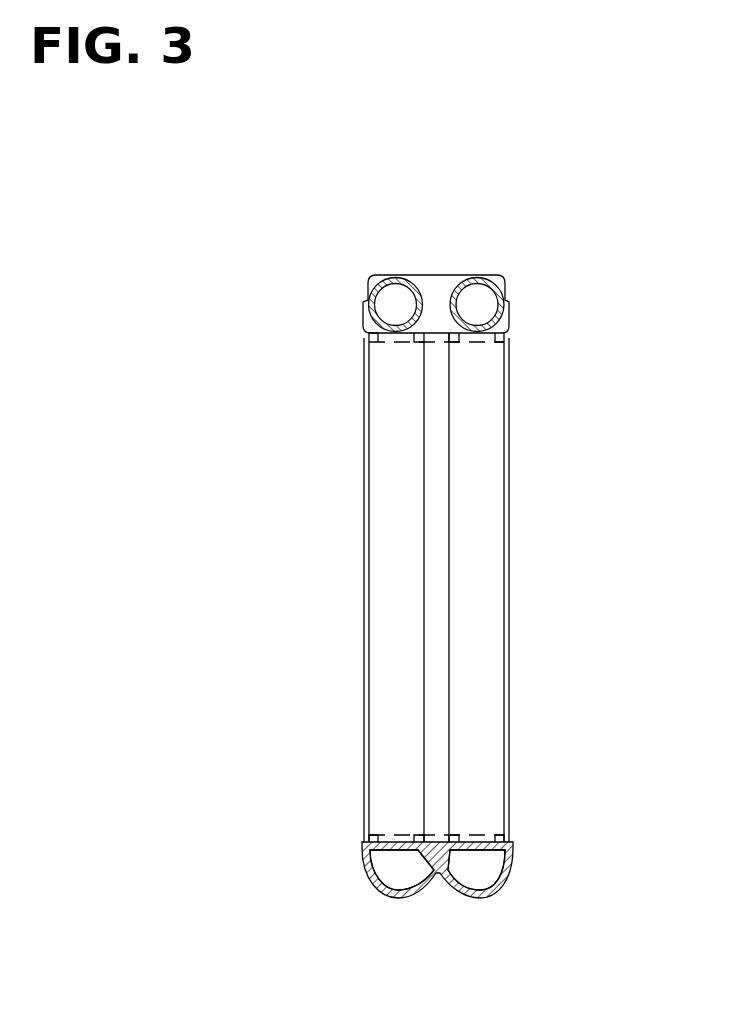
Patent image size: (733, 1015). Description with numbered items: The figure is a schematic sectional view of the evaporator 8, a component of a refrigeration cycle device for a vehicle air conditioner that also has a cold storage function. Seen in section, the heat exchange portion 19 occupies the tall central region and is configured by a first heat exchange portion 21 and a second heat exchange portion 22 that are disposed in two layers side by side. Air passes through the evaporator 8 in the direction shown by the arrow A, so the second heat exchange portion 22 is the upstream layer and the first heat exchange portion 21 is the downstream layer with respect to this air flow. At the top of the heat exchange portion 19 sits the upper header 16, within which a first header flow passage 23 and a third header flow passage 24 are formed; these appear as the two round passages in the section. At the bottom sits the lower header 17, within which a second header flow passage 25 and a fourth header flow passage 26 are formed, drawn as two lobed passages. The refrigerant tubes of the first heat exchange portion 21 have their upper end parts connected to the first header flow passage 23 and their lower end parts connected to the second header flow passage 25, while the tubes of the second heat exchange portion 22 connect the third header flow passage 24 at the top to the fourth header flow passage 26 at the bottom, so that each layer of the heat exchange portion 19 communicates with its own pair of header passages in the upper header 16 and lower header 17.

The evaporator 8 is at (528, 380).
The upper header 16 is at (451, 258).
The lower header 17 is at (476, 905).
The heat exchange portion 19 is at (522, 587).
The first heat exchange portion 21 is at (481, 635).
The second heat exchange portion 22 is at (405, 708).
The first header flow passage 23 is at (487, 301).
The third header flow passage 24 is at (397, 302).
The second header flow passage 25 is at (497, 885).
The fourth header flow passage 26 is at (389, 878).
The arrow indicating air flow direction A is at (347, 585).